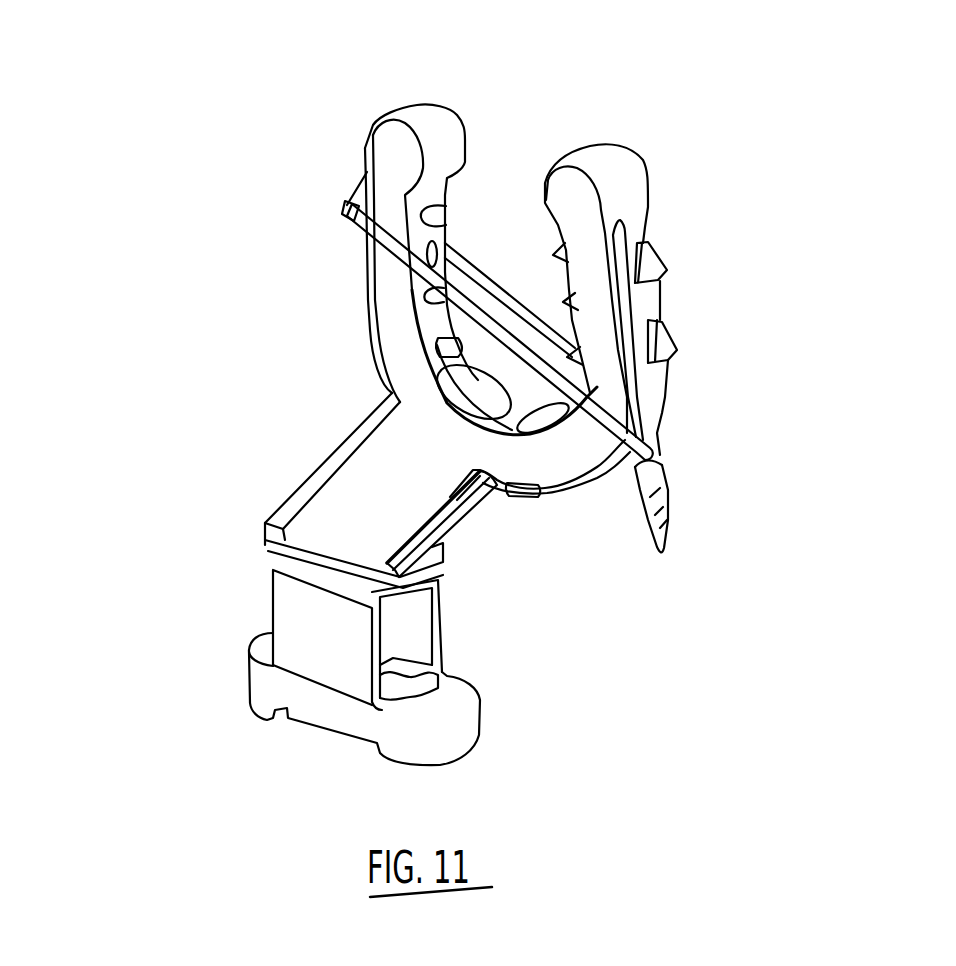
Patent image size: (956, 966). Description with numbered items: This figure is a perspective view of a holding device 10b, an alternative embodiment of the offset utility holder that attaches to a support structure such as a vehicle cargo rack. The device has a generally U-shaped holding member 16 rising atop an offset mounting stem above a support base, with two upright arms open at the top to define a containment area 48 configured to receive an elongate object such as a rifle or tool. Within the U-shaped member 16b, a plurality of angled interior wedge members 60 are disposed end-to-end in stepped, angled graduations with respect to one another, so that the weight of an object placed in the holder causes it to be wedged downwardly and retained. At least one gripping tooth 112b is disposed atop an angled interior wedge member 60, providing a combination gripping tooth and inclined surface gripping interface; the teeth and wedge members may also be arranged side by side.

The holding device 10b is at (301, 228).
The gripping teeth 112b is at (456, 190).
The containment area 48 is at (520, 213).
The holding member 16 is at (649, 222).
The U-shaped member 16b is at (583, 443).
The angled interior wedge members 60 is at (428, 333).